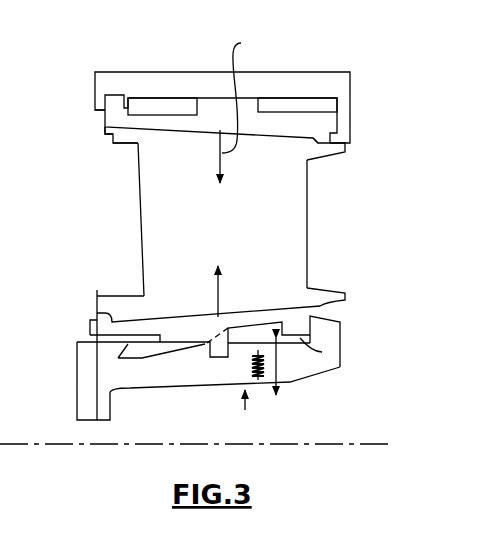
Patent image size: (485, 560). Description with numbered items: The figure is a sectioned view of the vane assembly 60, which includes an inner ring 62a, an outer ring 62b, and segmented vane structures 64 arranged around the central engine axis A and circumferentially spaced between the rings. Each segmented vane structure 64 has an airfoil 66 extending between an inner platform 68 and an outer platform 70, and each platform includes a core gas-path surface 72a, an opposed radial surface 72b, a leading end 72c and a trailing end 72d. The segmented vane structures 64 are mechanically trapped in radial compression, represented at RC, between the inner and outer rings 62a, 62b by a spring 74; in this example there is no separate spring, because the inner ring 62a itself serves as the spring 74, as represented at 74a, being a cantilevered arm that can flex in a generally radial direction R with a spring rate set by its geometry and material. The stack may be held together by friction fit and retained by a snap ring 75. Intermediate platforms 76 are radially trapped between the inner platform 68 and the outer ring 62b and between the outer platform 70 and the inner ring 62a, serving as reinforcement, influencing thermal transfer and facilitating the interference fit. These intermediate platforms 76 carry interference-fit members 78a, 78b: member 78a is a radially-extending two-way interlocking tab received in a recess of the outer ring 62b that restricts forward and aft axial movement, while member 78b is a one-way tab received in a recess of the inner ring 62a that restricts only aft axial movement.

The vane assembly 60 is at (72, 302).
The inner ring 62a is at (158, 390).
The outer ring 62b is at (149, 70).
The segmented vane structure 64 is at (309, 222).
The airfoil 66 is at (141, 213).
The inner platform 68 is at (122, 148).
The outer platform 70 is at (114, 290).
The core gas-path surface 72a is at (320, 157).
The radial surface 72b is at (297, 137).
The leading end 72c is at (104, 140).
The trailing end 72d is at (352, 148).
The spring 74 is at (245, 410).
The inner ring serving as spring 74a is at (247, 366).
The snap ring 75 is at (77, 365).
The intermediate platform 76 is at (188, 103).
The interference-fit member 78a is at (95, 101).
The interference-fit member 78b is at (310, 348).
The radial compression RC is at (241, 175).
The radial direction R is at (277, 388).
The central engine axis A is at (80, 444).